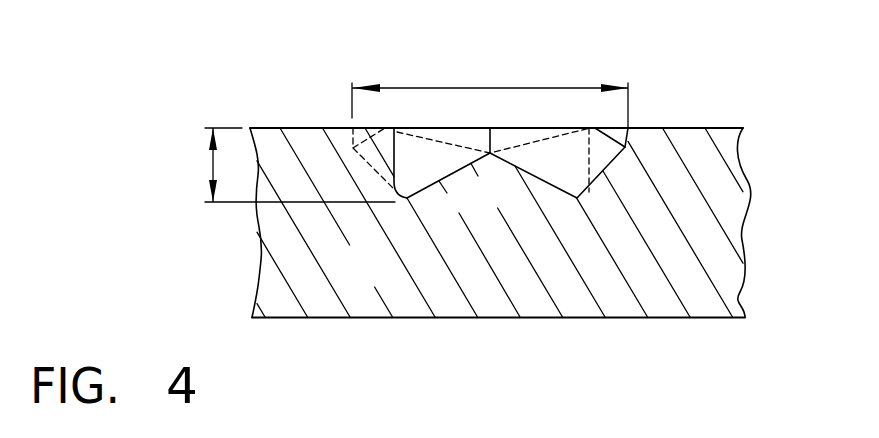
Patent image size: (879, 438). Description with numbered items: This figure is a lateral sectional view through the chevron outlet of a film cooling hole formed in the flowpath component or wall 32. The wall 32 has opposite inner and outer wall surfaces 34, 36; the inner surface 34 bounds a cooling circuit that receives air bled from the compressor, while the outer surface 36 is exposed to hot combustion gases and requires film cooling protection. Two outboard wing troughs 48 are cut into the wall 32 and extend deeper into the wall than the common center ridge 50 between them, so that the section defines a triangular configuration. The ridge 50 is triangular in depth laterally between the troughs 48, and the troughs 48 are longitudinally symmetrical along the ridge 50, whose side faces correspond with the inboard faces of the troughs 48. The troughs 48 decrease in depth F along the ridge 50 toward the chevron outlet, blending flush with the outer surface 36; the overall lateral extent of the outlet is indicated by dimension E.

The wall 32 is at (385, 277).
The inner wall surface 34 is at (676, 318).
The outer wall surface 36 is at (688, 128).
The troughs 48 is at (408, 174).
The ridge 50 is at (490, 153).
The groove width dimension E is at (480, 88).
The depth F is at (213, 168).